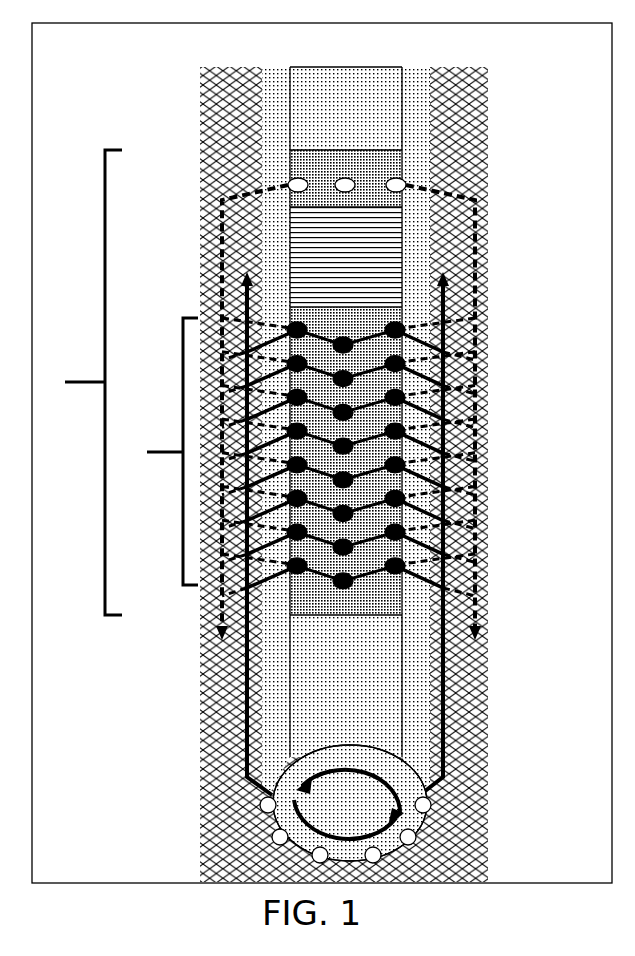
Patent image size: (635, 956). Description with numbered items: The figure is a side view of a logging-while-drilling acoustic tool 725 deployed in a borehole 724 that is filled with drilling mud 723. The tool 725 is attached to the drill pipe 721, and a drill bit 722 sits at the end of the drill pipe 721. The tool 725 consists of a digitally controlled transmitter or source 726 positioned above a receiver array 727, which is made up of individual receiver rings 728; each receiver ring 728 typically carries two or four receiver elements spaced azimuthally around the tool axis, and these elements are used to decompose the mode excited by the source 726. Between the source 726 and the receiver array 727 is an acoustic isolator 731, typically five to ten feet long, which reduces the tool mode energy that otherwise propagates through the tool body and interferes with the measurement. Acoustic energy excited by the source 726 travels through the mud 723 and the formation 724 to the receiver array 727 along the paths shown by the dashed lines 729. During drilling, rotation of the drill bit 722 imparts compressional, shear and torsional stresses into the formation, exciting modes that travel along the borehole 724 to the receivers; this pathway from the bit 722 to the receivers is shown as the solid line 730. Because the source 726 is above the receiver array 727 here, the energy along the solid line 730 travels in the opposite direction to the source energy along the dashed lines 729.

The drill pipe 721 is at (372, 79).
The drill bit 722 is at (360, 822).
The drilling mud 723 is at (410, 760).
The borehole 724 is at (453, 710).
The LWD acoustic tool 725 is at (77, 382).
The digitally controlled source 726 is at (406, 185).
The receiver array 727 is at (157, 451).
The receiver ring 728 is at (405, 330).
The acoustic energy paths 729 is at (473, 470).
The pathway of drilling modes 730 is at (470, 670).
The acoustic isolator 731 is at (400, 257).